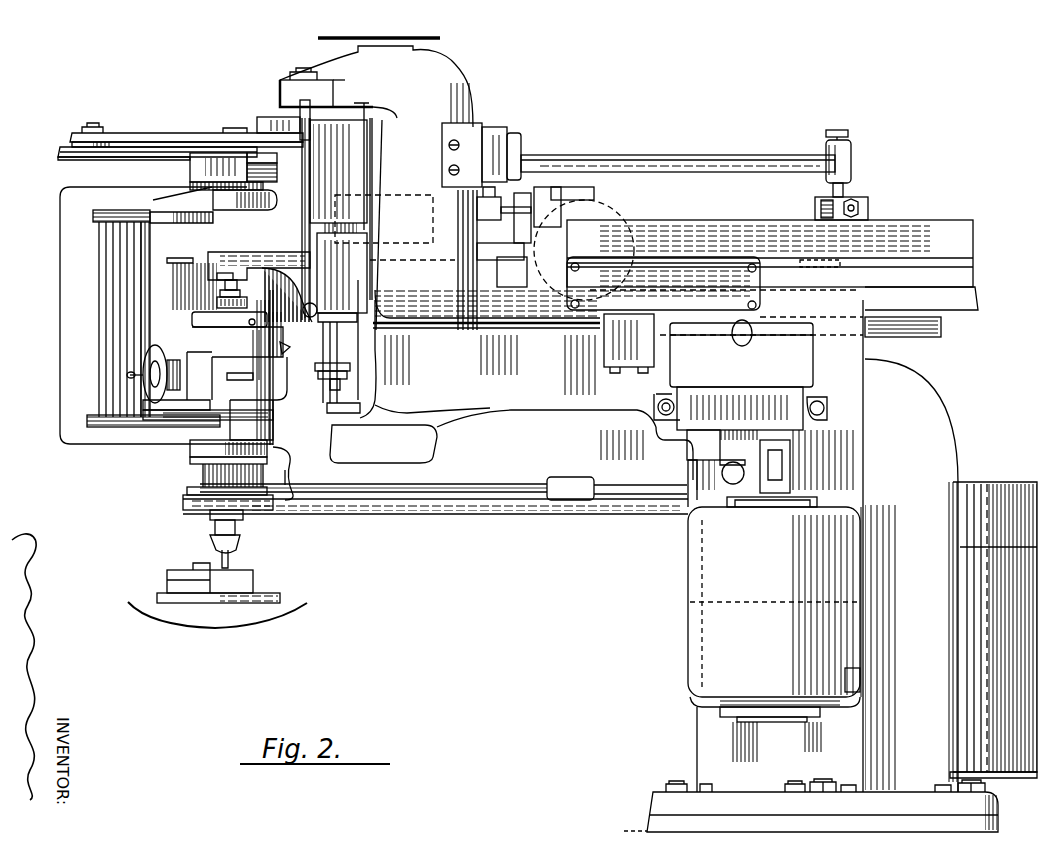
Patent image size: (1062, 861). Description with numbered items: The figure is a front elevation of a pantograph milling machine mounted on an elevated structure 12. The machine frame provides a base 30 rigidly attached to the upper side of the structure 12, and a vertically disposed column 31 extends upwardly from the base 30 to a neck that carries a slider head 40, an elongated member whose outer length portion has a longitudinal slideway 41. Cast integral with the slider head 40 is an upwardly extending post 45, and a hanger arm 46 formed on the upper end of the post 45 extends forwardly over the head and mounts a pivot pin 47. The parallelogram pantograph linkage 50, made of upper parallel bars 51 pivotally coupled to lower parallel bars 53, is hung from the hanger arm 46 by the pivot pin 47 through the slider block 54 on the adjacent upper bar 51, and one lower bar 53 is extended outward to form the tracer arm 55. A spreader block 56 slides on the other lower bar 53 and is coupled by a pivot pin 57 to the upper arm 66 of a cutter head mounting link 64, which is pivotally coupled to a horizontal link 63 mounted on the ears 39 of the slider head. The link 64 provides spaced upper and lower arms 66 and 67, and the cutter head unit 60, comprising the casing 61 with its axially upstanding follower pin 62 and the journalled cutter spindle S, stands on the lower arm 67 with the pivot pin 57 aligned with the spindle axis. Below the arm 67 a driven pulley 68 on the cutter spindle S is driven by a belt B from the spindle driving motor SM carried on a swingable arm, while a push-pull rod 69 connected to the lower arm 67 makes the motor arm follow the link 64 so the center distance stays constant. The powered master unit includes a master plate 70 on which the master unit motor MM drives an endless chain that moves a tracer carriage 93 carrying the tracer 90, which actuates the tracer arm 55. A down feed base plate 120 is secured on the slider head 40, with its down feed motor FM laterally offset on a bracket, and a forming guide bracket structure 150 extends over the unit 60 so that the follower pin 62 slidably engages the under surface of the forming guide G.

The elevated structure 12 is at (647, 825).
The base 30 is at (648, 792).
The column 31 is at (940, 465).
The ears 39 is at (437, 420).
The slider head 40 is at (915, 312).
The slideway 41 is at (935, 292).
The post 45 is at (462, 88).
The hanger arm 46 is at (316, 92).
The pivot pin 47 is at (318, 70).
The pantograph linkage 50 is at (44, 150).
The upper parallel bars 51 is at (110, 137).
The lower parallel bars 53 is at (112, 157).
The slider block 54 is at (268, 127).
The tracer arm 55 is at (640, 155).
The spreader block 56 is at (200, 165).
The pivot pin 57 is at (212, 183).
The cutter head unit 60 is at (280, 435).
The casing 61 is at (197, 336).
The follower pin 62 is at (230, 285).
The horizontal link 63 is at (322, 420).
The cutter head mounting link 64 is at (70, 305).
The upper arm 66 is at (232, 205).
The lower arm 67 is at (156, 440).
The driven pulley 68 is at (190, 497).
The push-pull rod 69 is at (480, 489).
The master plate 70 is at (890, 228).
The tracer 90 is at (864, 190).
The tracer carriage 93 is at (800, 212).
The base plate 120 is at (493, 253).
The forming guide bracket structure 150 is at (258, 258).
The belt B is at (433, 510).
The down feed motor FM is at (600, 207).
The forming guide G is at (222, 273).
The limit switch LS is at (502, 138).
The master unit motor MM is at (718, 632).
The cutter spindle S is at (246, 534).
The spindle driving motor SM is at (974, 684).